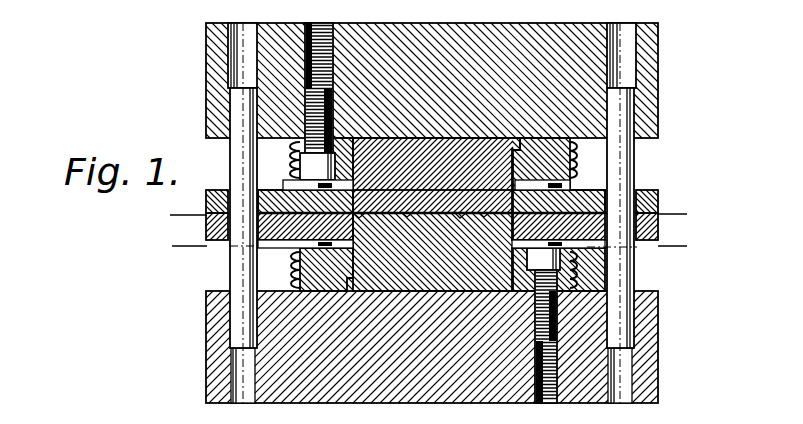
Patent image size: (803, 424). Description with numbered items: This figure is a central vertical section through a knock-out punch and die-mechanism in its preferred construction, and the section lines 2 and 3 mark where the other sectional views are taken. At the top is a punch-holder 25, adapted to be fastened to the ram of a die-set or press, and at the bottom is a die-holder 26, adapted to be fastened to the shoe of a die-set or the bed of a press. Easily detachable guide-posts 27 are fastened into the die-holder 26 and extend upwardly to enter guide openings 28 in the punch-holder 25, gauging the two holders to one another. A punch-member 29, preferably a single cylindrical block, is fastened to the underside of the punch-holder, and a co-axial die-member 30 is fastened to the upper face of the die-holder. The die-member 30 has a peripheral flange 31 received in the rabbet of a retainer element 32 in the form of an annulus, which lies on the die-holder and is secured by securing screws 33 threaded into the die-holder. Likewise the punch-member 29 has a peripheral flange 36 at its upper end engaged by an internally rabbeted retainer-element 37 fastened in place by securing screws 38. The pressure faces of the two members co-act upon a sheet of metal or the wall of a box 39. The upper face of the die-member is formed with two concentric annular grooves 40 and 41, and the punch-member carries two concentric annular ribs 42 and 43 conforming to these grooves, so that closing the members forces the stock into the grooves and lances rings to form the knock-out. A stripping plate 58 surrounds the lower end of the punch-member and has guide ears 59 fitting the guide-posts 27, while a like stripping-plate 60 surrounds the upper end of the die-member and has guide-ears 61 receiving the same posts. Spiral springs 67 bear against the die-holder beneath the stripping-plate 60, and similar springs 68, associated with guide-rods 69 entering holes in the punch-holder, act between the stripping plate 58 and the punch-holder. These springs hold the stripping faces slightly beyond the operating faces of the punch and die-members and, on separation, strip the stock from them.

The section line 2- 2 is at (427, 211).
The section line 3- 3 is at (428, 244).
The punch-holder 25 is at (232, 89).
The die-holder 26 is at (650, 350).
The guide-posts 27 is at (240, 153).
The guide openings 28 is at (230, 58).
The punch-member 29 is at (427, 130).
The die-member 30 is at (439, 292).
The peripheral flange 31 is at (347, 280).
The retainer element 32 is at (290, 268).
The securing screws 33 is at (582, 265).
The peripheral flange 36 is at (345, 150).
The retainer-element 37 is at (582, 178).
The securing screws 38 is at (286, 160).
The sheet of metal or wall of a box 39 is at (353, 218).
The annular depression or groove 40 is at (461, 219).
The annular depression or groove 41 is at (485, 218).
The annular rib or elevation 42 is at (407, 213).
The annular rib or elevation 43 is at (390, 212).
The stripping plate 58 is at (582, 203).
The guide ears 59 is at (715, 194).
The stripping-plate 60 is at (590, 243).
The guide-ears 61 is at (658, 227).
The spiral spring 67 is at (258, 254).
The springs 68 is at (286, 183).
The guide-rods 69 is at (345, 194).